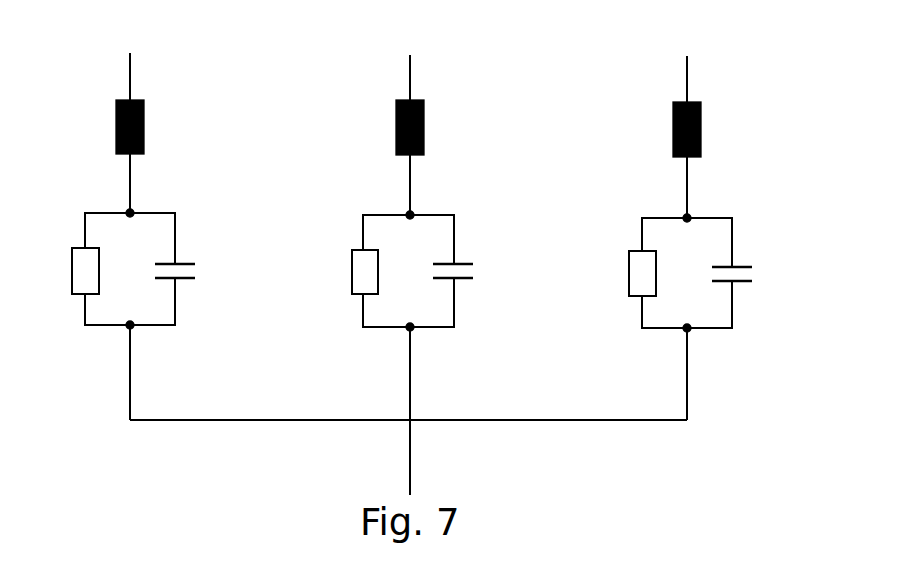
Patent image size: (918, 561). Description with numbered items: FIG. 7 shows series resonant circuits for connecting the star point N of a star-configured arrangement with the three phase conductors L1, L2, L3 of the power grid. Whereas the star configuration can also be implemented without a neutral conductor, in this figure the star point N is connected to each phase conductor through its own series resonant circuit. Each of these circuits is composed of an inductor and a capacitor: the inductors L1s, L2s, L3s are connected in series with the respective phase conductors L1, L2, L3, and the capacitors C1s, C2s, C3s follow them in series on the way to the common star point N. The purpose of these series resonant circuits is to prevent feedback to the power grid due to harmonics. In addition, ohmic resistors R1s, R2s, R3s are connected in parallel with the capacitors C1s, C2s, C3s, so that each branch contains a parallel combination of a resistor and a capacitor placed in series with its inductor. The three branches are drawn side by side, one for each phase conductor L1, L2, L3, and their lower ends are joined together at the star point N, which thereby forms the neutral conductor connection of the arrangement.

The phase conductor L1 is at (131, 62).
The phase conductor L2 is at (411, 63).
The phase conductor L3 is at (687, 64).
The star point N is at (397, 411).
The inductor L1s is at (151, 156).
The inductor L2s is at (432, 157).
The inductor L3s is at (711, 160).
The ohmic resistor R1s is at (80, 269).
The ohmic resistor R2s is at (359, 271).
The ohmic resistor R3s is at (636, 273).
The capacitor C1s is at (183, 269).
The capacitor C2s is at (464, 271).
The capacitor C3s is at (741, 273).